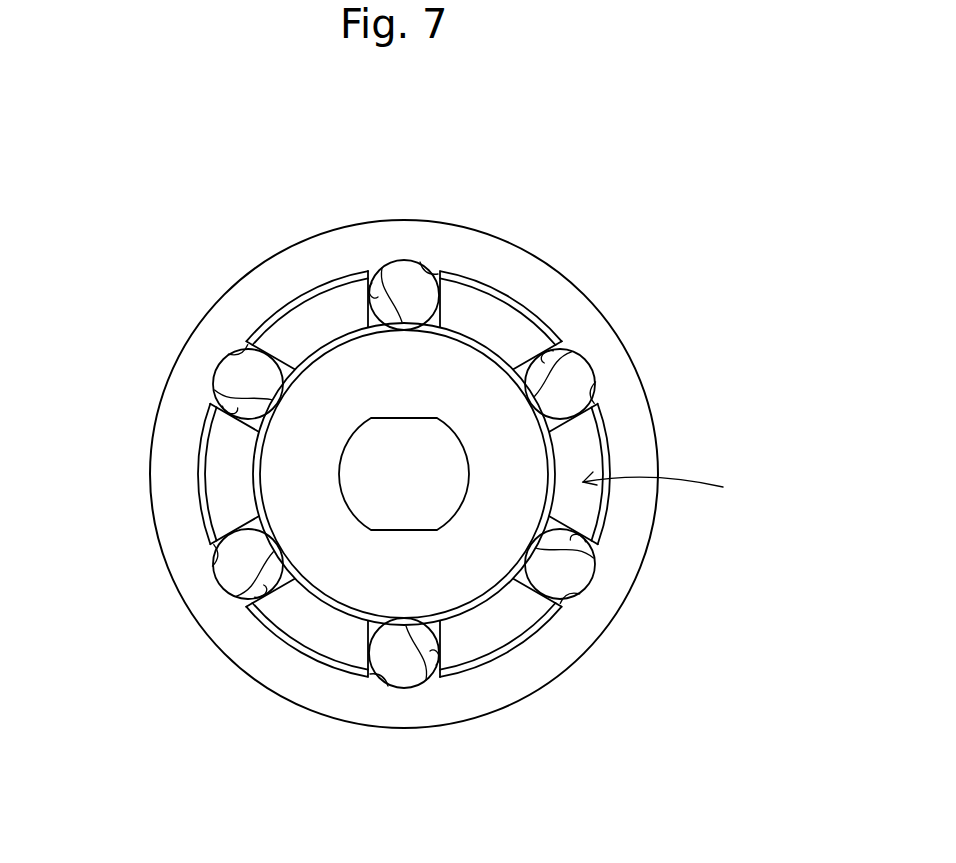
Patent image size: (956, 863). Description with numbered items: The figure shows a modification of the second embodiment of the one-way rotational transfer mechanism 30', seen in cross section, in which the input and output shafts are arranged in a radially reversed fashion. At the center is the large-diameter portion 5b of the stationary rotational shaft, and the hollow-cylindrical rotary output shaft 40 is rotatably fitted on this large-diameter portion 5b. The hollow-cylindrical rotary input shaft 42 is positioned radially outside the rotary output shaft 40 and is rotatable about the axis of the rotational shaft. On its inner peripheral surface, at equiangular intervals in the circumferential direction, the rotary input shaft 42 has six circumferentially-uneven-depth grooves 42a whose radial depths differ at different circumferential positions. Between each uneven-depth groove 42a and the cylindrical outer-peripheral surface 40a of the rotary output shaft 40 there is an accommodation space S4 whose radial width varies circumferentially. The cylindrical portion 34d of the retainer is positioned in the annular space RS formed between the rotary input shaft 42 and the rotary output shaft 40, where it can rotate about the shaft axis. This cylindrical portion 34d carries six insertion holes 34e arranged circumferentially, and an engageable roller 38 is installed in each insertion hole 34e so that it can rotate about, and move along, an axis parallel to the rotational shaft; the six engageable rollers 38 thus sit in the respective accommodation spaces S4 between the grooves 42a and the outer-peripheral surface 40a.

The one-way rotational transfer mechanism 30' is at (351, 444).
The cylindrical portion 34d is at (298, 322).
The insertion hole 34e is at (373, 270).
The accommodation space S4 is at (383, 290).
The engageable roller 38 is at (404, 303).
The rotary input shaft 42 is at (558, 662).
The circumferentially-uneven-depth groove 42a is at (435, 267).
The rotary output shaft 40 is at (373, 627).
The outer-peripheral surface 40a is at (553, 450).
The large-diameter portion 5b is at (423, 497).
The annular space RS is at (679, 483).